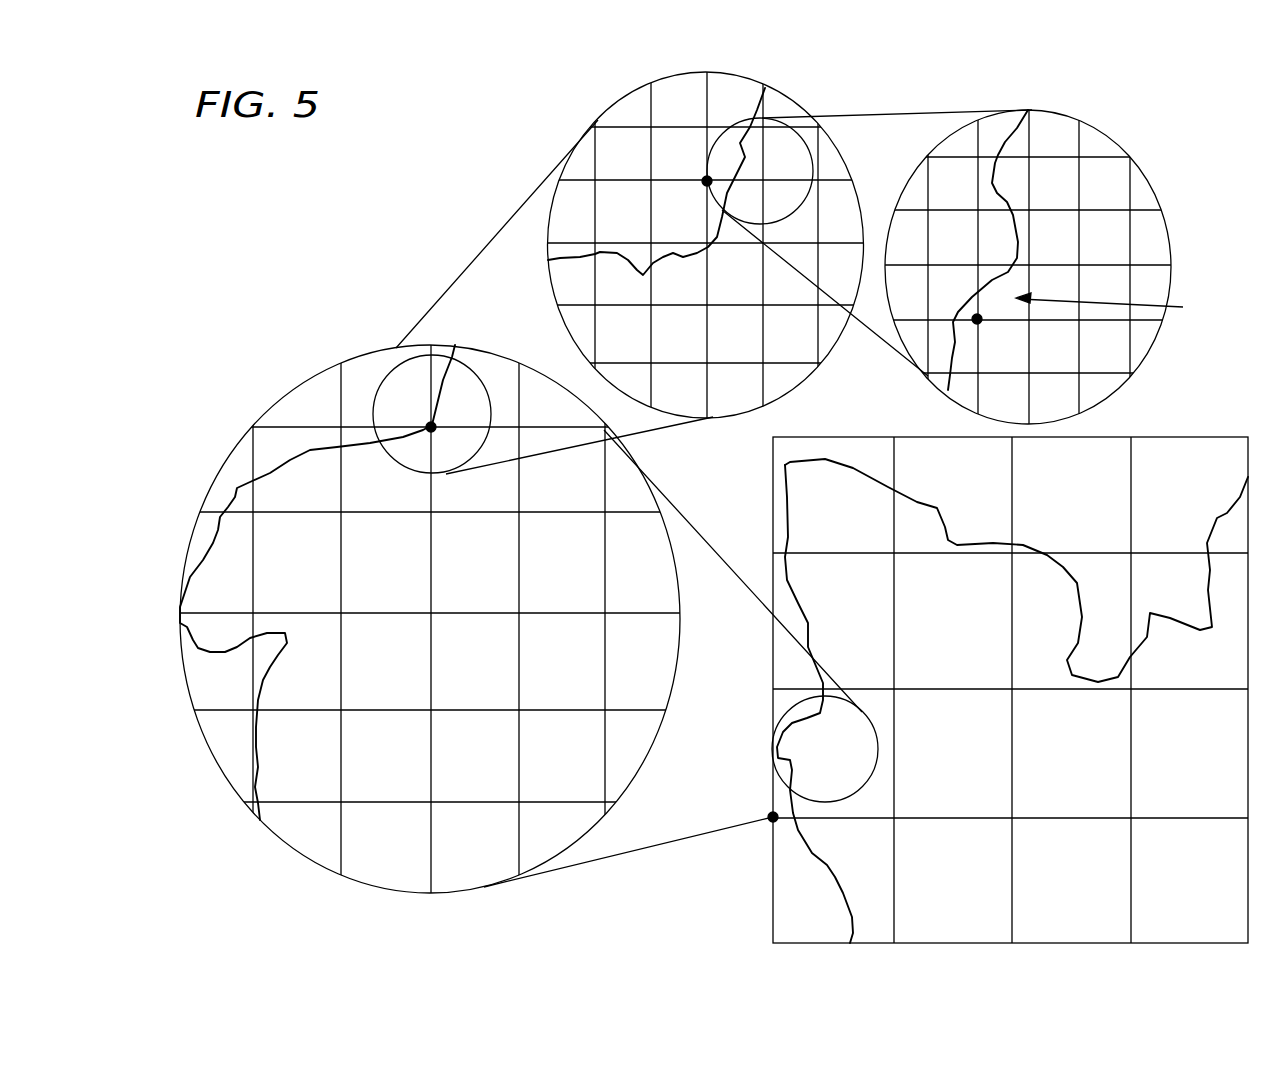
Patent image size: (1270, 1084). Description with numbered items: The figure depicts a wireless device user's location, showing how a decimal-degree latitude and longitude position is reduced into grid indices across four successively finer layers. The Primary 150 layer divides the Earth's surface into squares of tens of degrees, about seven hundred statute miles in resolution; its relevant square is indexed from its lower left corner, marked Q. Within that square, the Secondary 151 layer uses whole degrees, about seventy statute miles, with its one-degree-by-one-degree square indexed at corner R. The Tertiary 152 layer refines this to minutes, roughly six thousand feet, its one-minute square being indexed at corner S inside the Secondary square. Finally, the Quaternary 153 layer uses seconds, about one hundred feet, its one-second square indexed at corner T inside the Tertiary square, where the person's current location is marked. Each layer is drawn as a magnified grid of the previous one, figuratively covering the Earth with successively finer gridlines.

The Primary layer 150 is at (998, 671).
The Secondary layer 151 is at (432, 620).
The Tertiary layer 152 is at (705, 245).
The Quaternary layer 153 is at (1069, 268).